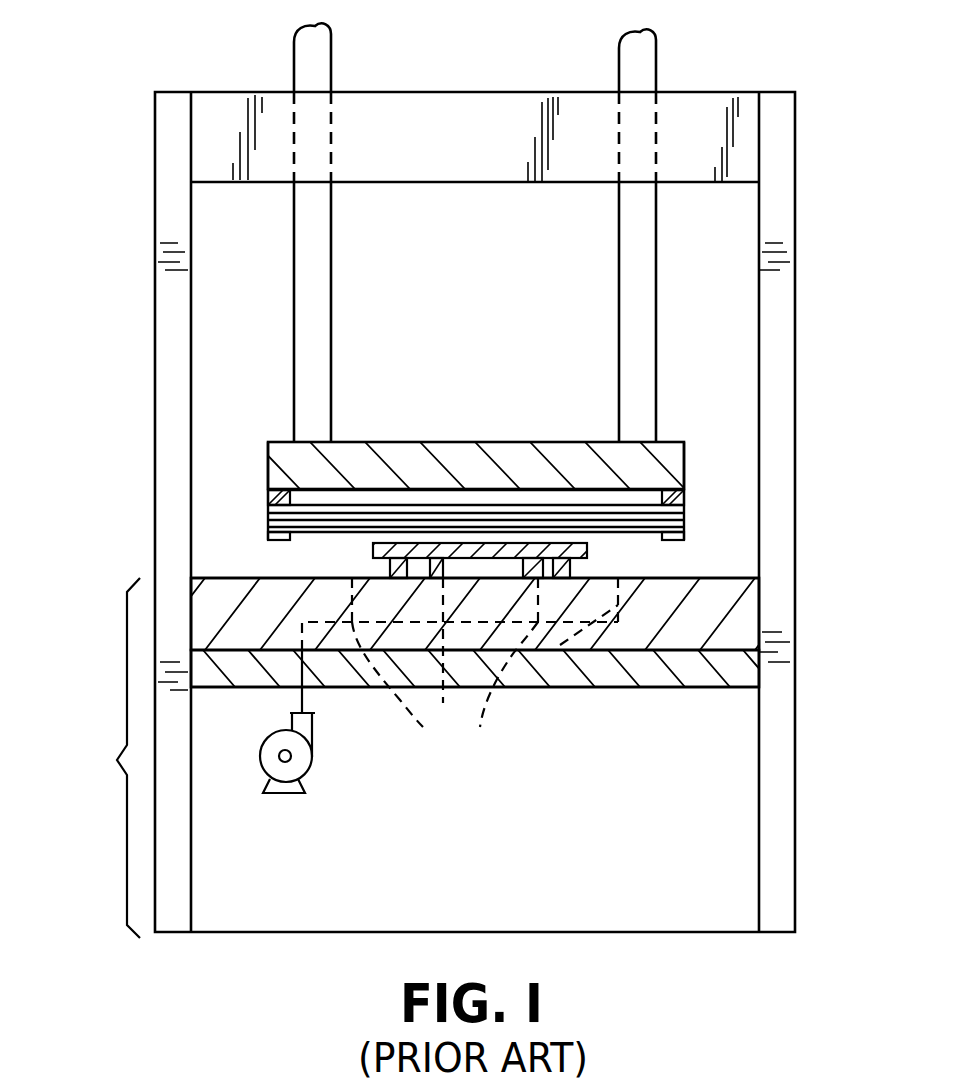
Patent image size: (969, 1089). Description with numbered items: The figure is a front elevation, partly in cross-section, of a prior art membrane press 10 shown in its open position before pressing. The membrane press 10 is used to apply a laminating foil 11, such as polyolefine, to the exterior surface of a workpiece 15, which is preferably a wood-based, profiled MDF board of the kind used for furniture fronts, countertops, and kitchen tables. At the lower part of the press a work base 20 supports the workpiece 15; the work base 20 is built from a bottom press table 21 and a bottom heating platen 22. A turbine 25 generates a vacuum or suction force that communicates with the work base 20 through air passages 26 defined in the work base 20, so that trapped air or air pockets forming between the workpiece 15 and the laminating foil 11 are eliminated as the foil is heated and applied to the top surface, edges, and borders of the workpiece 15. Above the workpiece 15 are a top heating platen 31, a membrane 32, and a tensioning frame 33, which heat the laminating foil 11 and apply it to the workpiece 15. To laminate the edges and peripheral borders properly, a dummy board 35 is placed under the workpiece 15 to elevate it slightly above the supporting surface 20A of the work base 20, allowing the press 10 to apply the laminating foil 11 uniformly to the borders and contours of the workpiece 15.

The membrane press 10 is at (88, 158).
The laminating foil 11 is at (645, 531).
The workpiece 15 is at (707, 597).
The work base 20 is at (452, 735).
The supporting surface 20A is at (742, 580).
The bottom press table 21 is at (568, 684).
The bottom heating platen 22 is at (623, 642).
The turbine 25 is at (290, 770).
The air passages 26 is at (460, 661).
The top heating platen 31 is at (668, 452).
The membrane 32 is at (320, 503).
The tensioning frame 33 is at (686, 502).
The dummy board 35 is at (405, 568).